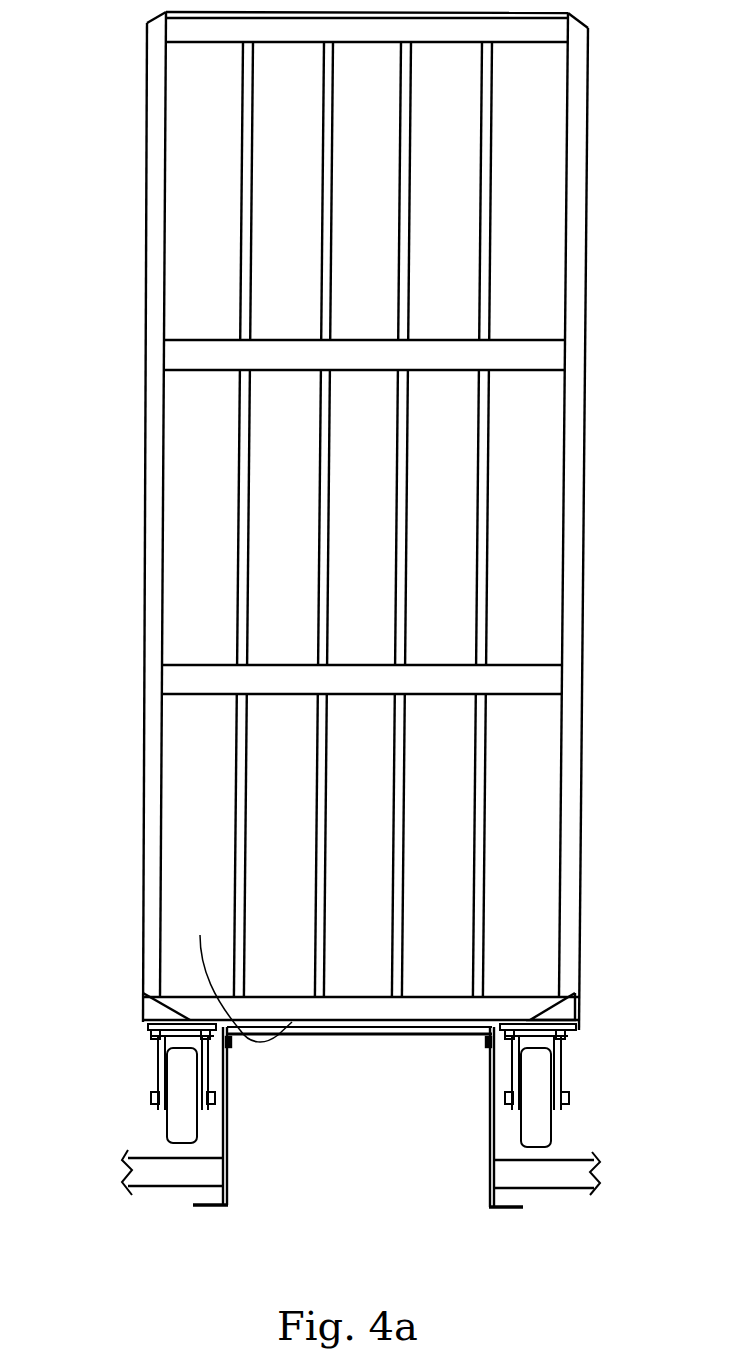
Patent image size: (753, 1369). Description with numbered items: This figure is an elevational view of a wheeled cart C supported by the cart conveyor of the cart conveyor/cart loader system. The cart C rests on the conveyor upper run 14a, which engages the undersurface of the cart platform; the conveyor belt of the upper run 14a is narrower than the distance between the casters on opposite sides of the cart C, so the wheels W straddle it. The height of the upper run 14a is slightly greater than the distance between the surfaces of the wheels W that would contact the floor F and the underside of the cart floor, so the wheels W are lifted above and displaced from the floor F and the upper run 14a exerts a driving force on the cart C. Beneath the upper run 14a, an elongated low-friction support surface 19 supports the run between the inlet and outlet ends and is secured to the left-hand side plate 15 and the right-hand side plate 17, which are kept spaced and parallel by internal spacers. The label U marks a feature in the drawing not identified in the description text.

The wheeled cart C is at (720, 308).
The U-shaped hook member U is at (242, 973).
The elongated support surface 19 is at (330, 1035).
The upper run 14a is at (463, 1035).
The first elongated side plate 15 is at (228, 1138).
The side plate 17 is at (490, 1142).
The wheels W is at (173, 1122).
The floor F is at (150, 1158).